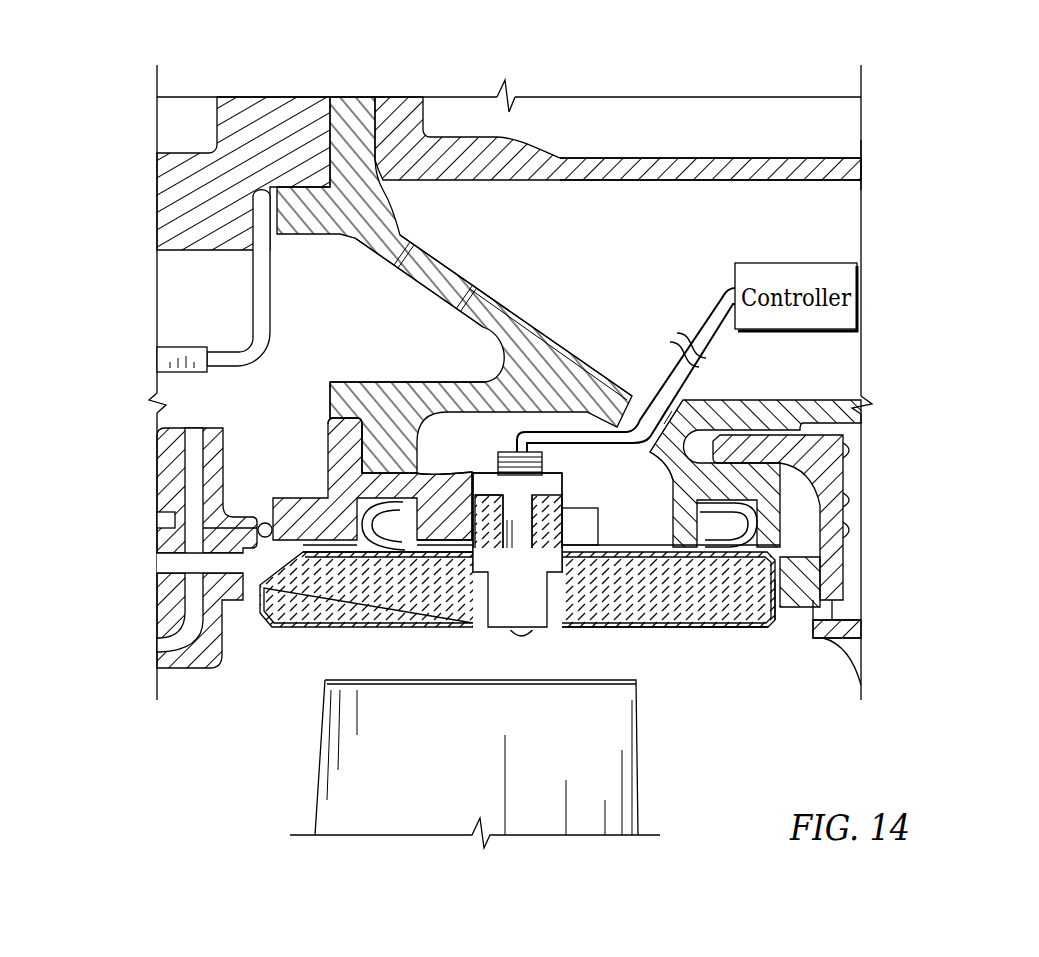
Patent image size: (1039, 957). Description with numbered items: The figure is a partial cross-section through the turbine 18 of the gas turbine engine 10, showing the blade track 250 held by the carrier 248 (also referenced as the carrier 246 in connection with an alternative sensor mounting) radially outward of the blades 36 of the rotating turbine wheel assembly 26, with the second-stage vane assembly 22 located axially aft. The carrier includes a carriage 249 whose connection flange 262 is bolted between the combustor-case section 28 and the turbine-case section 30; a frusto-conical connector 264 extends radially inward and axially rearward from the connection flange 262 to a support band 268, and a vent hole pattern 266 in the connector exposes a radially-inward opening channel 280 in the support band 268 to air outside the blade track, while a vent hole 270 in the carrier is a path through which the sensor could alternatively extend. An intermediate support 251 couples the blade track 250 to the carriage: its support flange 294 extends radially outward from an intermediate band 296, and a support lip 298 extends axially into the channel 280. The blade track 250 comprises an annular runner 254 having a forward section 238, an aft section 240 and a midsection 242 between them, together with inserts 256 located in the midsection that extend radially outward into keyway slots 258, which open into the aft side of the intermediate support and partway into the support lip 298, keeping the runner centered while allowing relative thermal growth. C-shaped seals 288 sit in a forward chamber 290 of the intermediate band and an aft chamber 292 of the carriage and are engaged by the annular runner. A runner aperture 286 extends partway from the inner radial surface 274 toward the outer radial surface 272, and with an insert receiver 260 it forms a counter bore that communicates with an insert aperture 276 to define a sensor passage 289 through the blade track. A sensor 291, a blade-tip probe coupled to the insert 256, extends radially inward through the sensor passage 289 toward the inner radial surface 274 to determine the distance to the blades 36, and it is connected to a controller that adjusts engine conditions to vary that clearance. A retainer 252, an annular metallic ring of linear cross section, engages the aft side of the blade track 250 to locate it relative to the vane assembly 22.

The gas turbine engine 10 is at (946, 120).
The turbine 18 is at (864, 147).
The turbine vane assembly 22 is at (848, 468).
The turbine wheel assembly 26 is at (358, 773).
The combustor-case section 28 is at (216, 112).
The turbine-case section 30 is at (625, 158).
The blades 36 is at (332, 813).
The forward section 238 is at (292, 645).
The aft section 240 is at (780, 634).
The midsection 242 is at (618, 636).
The carrier 246 is at (636, 262).
The carrier 248 is at (606, 374).
The carriage 249 is at (509, 298).
The blade track 250 is at (737, 648).
The intermediate support 251 is at (327, 448).
The retainer 252 is at (830, 572).
The annular runner 254 is at (712, 632).
The inserts 256 is at (543, 495).
The keyway slots 258 is at (584, 536).
The insert receiver 260 is at (480, 580).
The connection flange 262 is at (385, 113).
The connector 264 is at (400, 219).
The vent hole pattern 266 is at (396, 265).
The support band 268 is at (798, 399).
The vent hole 270 is at (677, 402).
The outer radial surface 272 is at (397, 600).
The inner radial surface 274 is at (310, 628).
The insert aperture 276 is at (510, 476).
The channel 280 is at (465, 425).
The runner aperture 286 is at (541, 625).
The seal 288 is at (399, 500).
The sensor passage 289 is at (537, 600).
The forward chamber 290 is at (360, 502).
The sensor 291 is at (544, 474).
The aft chamber 292 is at (688, 500).
The support flange 294 is at (329, 418).
The intermediate band 296 is at (265, 523).
The support lip 298 is at (462, 508).